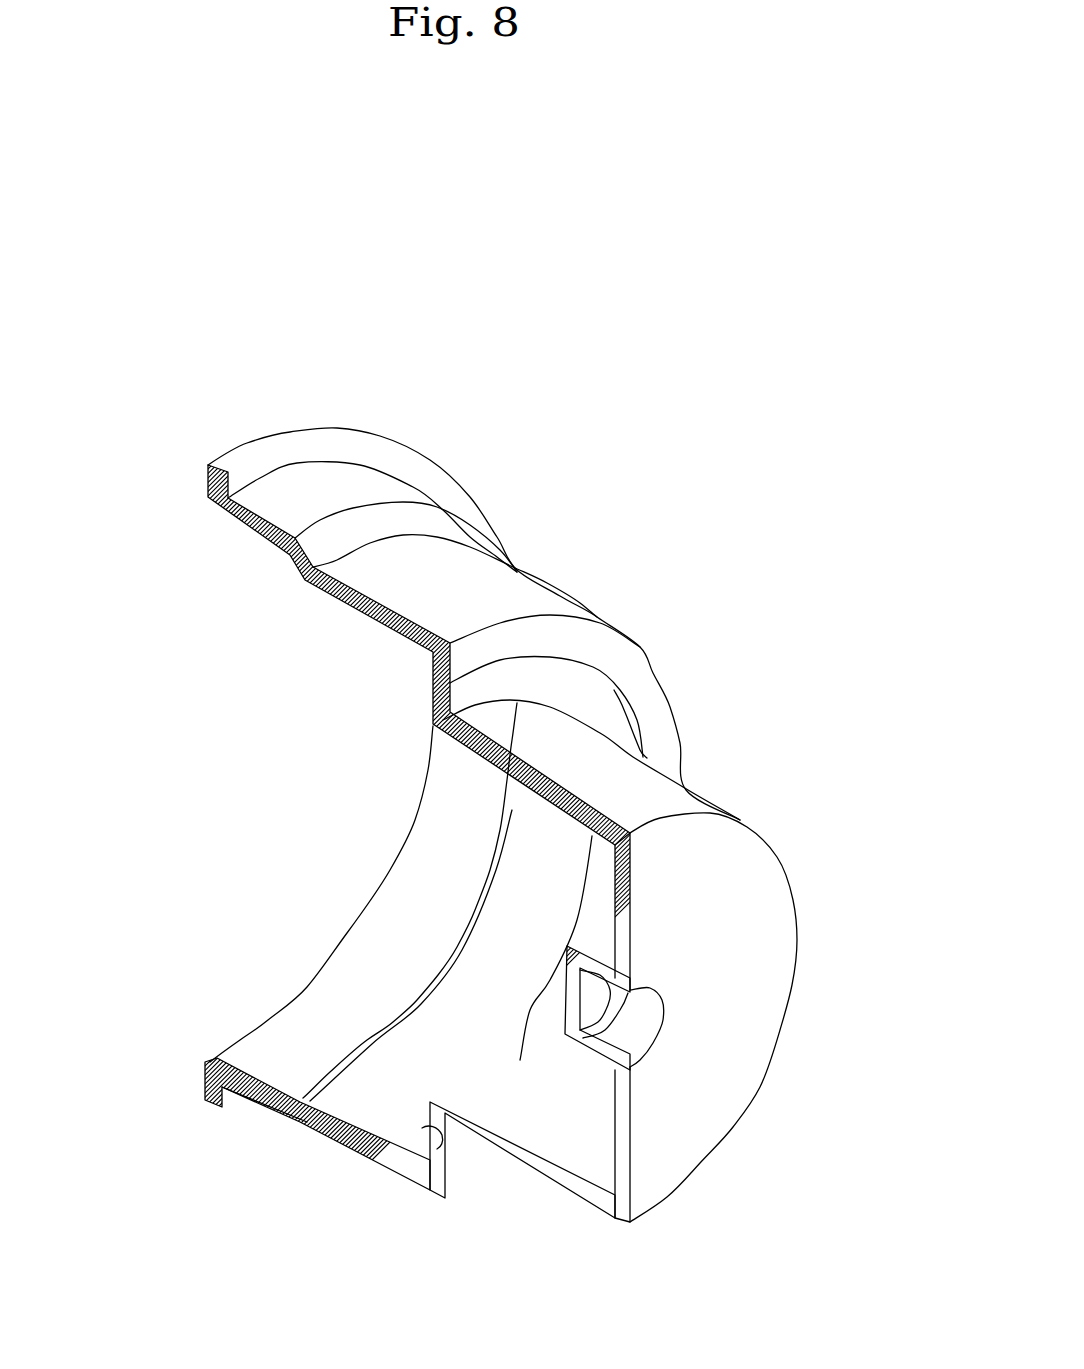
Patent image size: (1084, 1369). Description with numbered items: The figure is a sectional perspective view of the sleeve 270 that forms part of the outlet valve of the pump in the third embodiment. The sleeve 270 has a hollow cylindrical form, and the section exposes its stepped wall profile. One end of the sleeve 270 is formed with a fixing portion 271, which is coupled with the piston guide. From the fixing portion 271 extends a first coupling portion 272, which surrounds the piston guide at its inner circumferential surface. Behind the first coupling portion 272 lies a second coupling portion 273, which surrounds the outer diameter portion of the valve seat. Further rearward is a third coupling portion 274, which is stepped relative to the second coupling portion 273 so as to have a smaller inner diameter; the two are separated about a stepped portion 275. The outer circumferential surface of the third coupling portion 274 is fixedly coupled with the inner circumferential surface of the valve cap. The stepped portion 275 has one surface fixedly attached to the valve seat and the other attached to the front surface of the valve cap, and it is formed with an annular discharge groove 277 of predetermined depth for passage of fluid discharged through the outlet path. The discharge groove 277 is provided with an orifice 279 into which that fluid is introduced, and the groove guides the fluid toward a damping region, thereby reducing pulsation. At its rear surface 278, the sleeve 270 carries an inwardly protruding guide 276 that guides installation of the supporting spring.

The sleeve 270 is at (198, 426).
The fixing portion 271 is at (290, 443).
The first coupling portion 272 is at (343, 490).
The second coupling portion 273 is at (520, 590).
The third coupling portion 274 is at (680, 805).
The stepped portion 275 is at (653, 717).
The guide 276 is at (567, 1010).
The discharge groove 277 is at (580, 703).
The rear surface 278 is at (753, 963).
The orifice 279 is at (430, 1127).